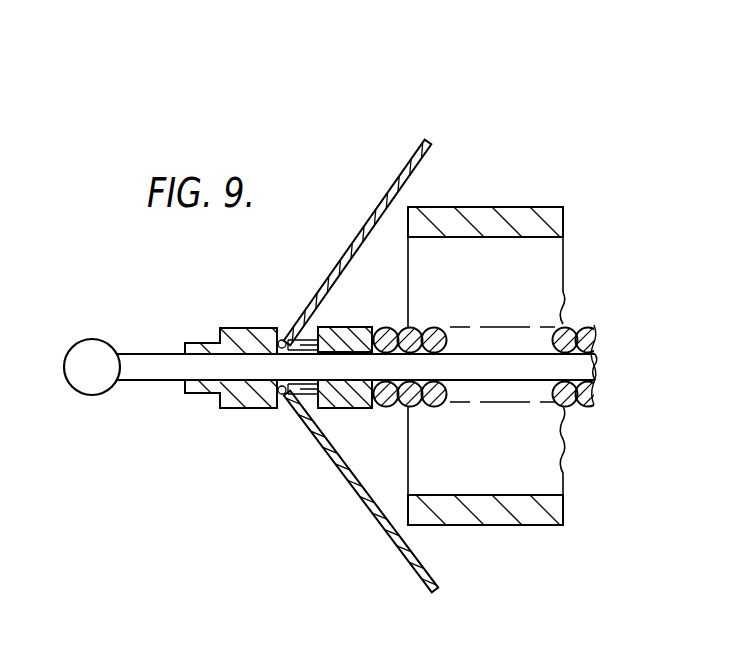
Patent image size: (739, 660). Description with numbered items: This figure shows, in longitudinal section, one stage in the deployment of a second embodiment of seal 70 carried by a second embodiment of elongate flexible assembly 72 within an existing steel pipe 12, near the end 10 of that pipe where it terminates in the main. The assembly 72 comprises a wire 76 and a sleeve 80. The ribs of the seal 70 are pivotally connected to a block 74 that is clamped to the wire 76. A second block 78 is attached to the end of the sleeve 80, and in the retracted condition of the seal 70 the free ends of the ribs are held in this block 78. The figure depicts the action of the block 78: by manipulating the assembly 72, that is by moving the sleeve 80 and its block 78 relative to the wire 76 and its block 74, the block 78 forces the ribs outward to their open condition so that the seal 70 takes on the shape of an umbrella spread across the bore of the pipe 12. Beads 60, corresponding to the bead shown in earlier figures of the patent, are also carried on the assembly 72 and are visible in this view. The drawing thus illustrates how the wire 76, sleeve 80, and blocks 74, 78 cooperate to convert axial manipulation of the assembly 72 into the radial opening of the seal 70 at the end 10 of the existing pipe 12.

The end 10 is at (414, 508).
The existing steel pipe 12 is at (483, 516).
The bead 60 is at (96, 350).
The seal 70 is at (318, 282).
The elongate assembly 72 is at (492, 318).
The block 74 is at (238, 328).
The wire 76 is at (160, 362).
The block 78 is at (347, 330).
The sleeve 80 is at (432, 327).